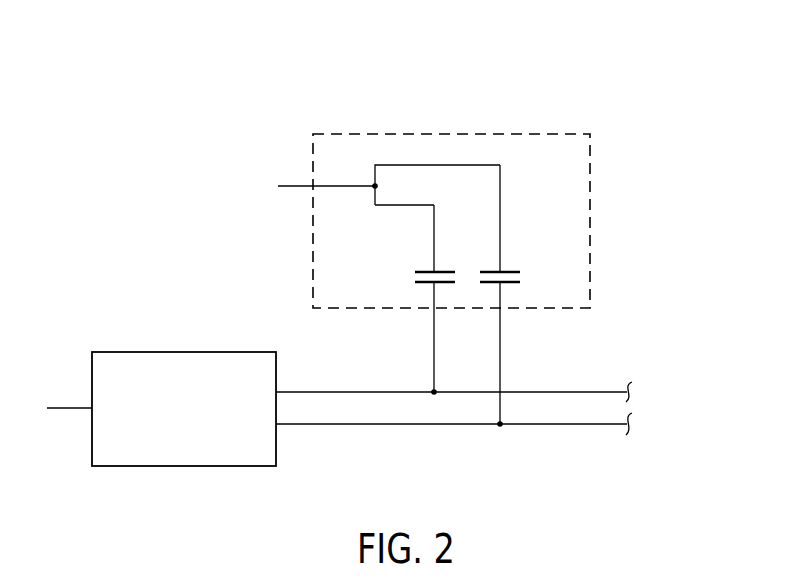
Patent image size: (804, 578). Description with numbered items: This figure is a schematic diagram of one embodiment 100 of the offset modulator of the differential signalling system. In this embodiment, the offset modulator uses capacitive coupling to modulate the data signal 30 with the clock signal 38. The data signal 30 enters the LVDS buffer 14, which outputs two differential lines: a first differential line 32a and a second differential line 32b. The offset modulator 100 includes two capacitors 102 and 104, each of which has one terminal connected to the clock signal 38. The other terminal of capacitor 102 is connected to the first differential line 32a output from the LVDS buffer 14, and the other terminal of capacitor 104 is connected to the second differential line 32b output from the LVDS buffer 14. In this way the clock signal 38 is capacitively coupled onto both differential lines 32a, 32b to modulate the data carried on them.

The offset modulator embodiment 100 is at (576, 131).
The capacitor C1 102 is at (417, 263).
The capacitor C2 104 is at (514, 261).
The clock signal 38 is at (288, 188).
The LVDS buffer 14 is at (173, 352).
The data signal 30 is at (68, 408).
The first differential line 32a is at (337, 392).
The second differential line 32b is at (342, 425).